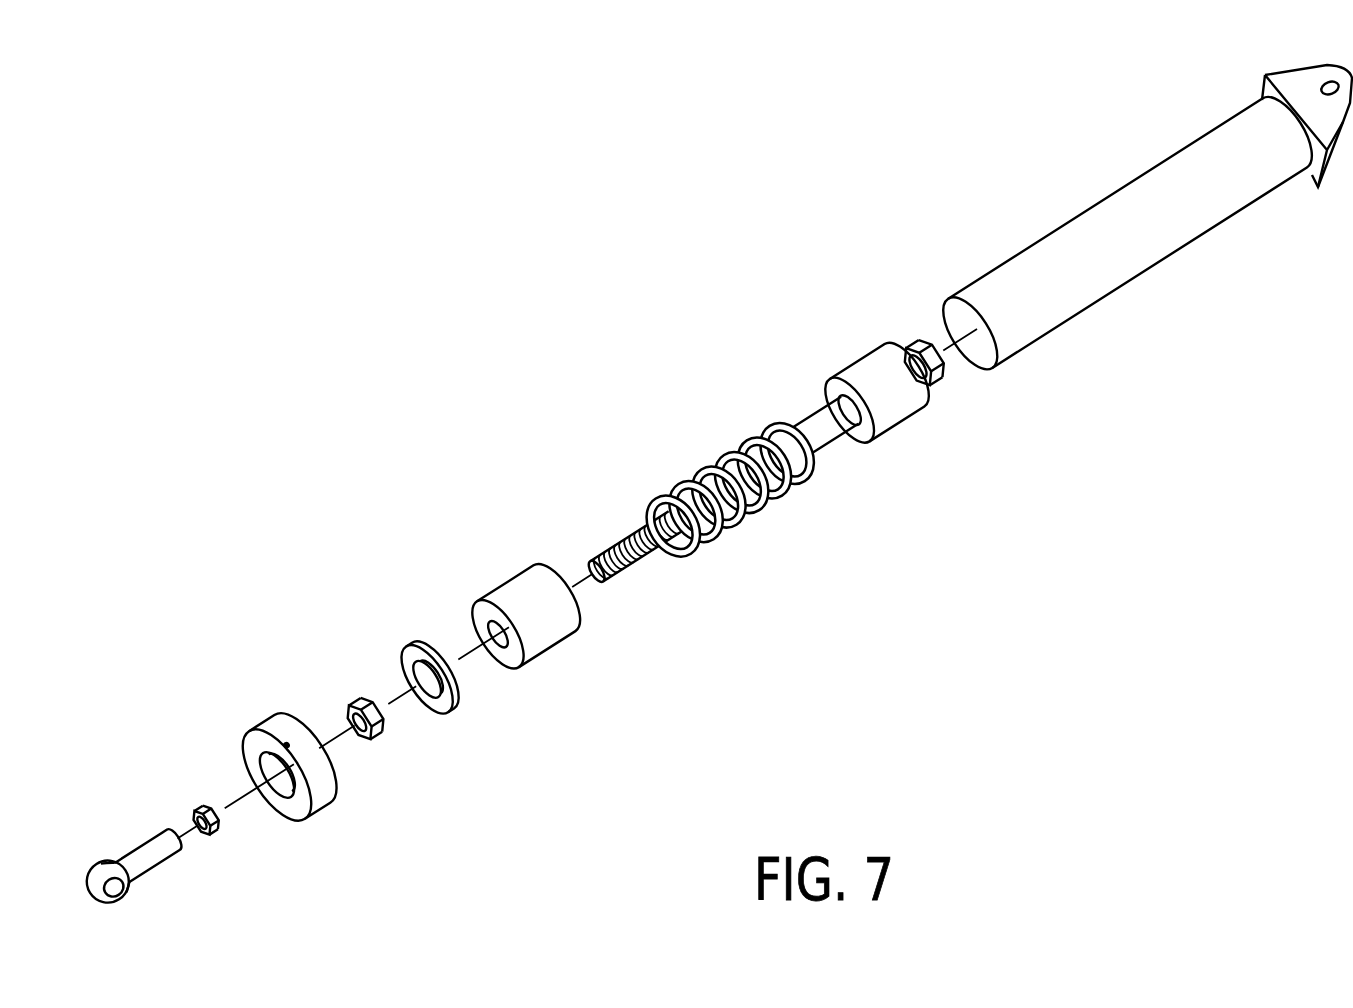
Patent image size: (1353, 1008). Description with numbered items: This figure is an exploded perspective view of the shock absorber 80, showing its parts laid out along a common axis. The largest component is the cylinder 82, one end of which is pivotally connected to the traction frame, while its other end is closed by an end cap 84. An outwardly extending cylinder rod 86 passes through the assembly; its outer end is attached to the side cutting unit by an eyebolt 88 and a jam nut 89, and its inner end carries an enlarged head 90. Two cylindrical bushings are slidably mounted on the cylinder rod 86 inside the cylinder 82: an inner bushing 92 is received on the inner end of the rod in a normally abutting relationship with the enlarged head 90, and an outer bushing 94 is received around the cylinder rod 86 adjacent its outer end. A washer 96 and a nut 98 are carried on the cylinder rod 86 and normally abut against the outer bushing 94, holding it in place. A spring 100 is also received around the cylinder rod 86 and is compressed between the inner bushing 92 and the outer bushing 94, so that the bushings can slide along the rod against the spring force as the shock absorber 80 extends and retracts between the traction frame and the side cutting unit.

The shock absorber 80 is at (750, 278).
The cylinder 82 is at (1121, 190).
The end cap 84 is at (271, 724).
The cylinder rod 86 is at (825, 438).
The eyebolt 88 is at (143, 850).
The jam nut 89 is at (217, 827).
The enlarged head 90 is at (941, 381).
The inner bushing 92 is at (868, 367).
The outer bushing 94 is at (516, 588).
The washer 96 is at (455, 708).
The nut 98 is at (390, 740).
The spring 100 is at (721, 459).